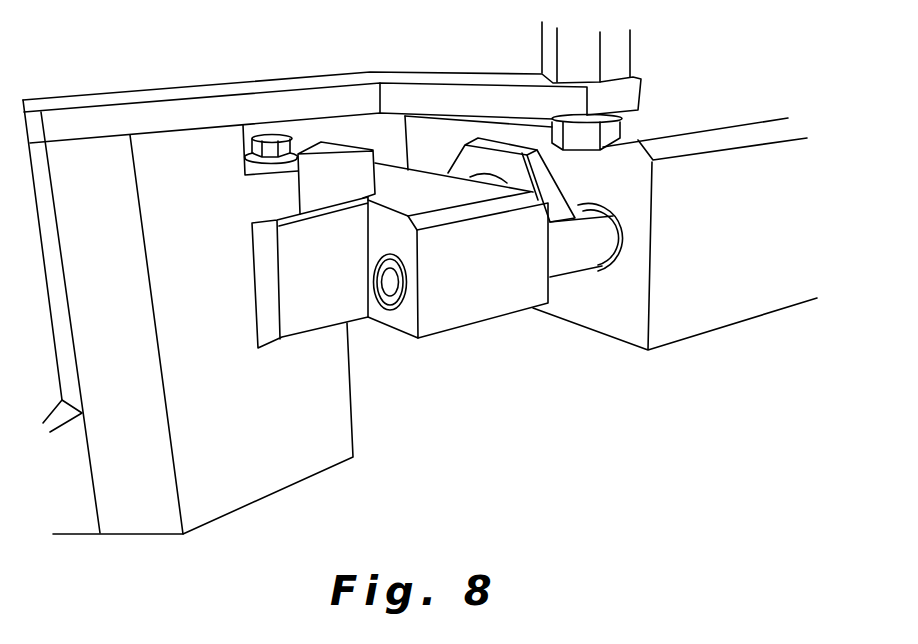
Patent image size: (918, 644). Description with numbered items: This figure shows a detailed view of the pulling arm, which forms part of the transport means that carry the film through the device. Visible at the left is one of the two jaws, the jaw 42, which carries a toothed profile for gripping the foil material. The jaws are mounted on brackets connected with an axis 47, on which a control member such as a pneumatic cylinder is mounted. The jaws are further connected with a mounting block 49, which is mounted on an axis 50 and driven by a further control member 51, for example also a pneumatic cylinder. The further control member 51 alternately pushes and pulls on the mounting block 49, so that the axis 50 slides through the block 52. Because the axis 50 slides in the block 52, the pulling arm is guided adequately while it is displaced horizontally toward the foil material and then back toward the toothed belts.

The jaw 42 is at (264, 427).
The axis 47 is at (305, 190).
The mounting block 49 is at (470, 243).
The axis 50 is at (583, 245).
The further control member 51 is at (470, 177).
The block 52 is at (707, 302).